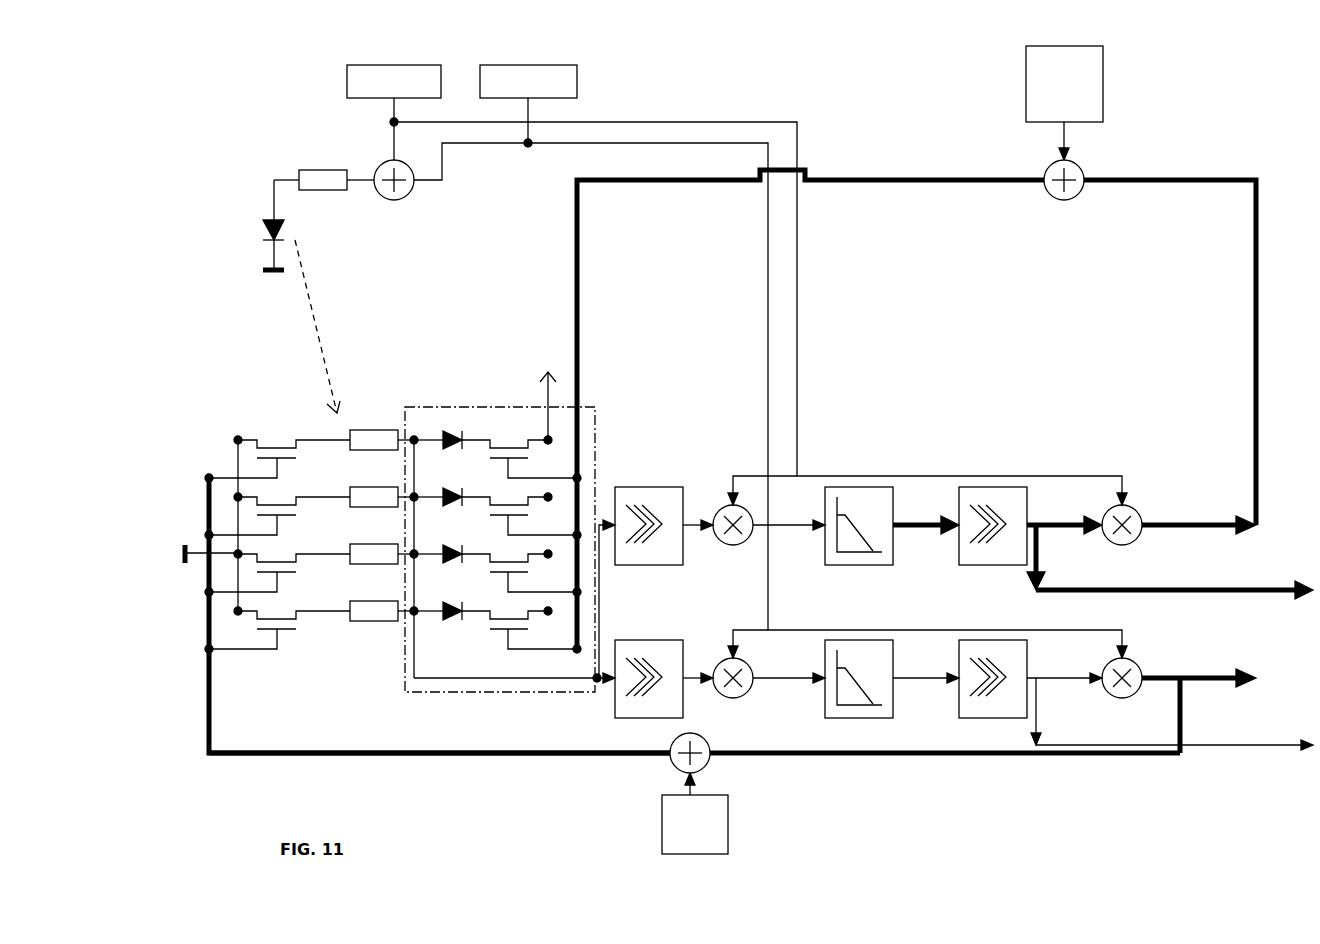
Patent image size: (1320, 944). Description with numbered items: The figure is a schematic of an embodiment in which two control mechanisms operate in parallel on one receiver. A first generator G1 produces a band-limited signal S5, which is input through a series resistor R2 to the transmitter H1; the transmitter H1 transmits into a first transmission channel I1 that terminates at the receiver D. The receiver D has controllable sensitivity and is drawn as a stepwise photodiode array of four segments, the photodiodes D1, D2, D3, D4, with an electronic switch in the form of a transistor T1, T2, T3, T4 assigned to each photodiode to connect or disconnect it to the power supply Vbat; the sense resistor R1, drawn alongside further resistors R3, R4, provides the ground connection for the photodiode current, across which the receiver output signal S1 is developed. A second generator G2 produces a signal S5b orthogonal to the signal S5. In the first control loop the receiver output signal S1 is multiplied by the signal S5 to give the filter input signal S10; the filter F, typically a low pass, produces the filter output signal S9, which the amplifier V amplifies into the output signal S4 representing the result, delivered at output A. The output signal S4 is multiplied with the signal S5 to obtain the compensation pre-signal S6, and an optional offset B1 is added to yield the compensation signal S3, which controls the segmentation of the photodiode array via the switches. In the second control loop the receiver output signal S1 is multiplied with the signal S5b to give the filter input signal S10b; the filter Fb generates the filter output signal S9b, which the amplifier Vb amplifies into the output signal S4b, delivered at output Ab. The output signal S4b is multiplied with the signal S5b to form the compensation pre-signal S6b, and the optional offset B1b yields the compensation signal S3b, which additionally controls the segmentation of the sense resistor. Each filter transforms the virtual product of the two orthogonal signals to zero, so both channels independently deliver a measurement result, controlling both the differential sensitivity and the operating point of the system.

The generator G1 is at (394, 112).
The generator G2 is at (528, 106).
The offset B1 is at (1064, 103).
The offset B1b is at (695, 813).
The transmitter signal S5 is at (750, 303).
The signal S5b is at (770, 400).
The series resistor R2 is at (344, 326).
The transmitter H1 is at (251, 225).
The first transmission channel I1 is at (317, 326).
The compensation signal S3 is at (830, 396).
The compensation pre-signal S6 is at (1170, 352).
The electronic switch T1 is at (395, 452).
The electronic switch T2 is at (395, 505).
The electronic switch T3 is at (395, 562).
The electronic switch T4 is at (395, 619).
The sense resistor R1 is at (382, 428).
The resistor R3 is at (382, 542).
The resistor R4 is at (382, 600).
The receiver D is at (499, 559).
The photodiode D1 is at (438, 434).
The photodiode D2 is at (438, 491).
The photodiode D3 is at (438, 548).
The photodiode D4 is at (438, 605).
The power supply Vbat is at (538, 393).
The receiver output signal S1 is at (514, 601).
The filter input signal S10 is at (789, 535).
The filter F is at (859, 539).
The filter output signal S9 is at (926, 536).
The amplifier V is at (993, 539).
The output signal S4 is at (1064, 553).
The output A is at (1174, 608).
The filter input signal S10b is at (789, 687).
The filter Fb is at (859, 689).
The filter output signal S9b is at (926, 687).
The amplifier Vb is at (993, 689).
The output signal S4b is at (1064, 709).
The output Ab is at (1174, 762).
The compensation pre-signal S6b is at (983, 725).
The compensation signal S3b is at (459, 757).